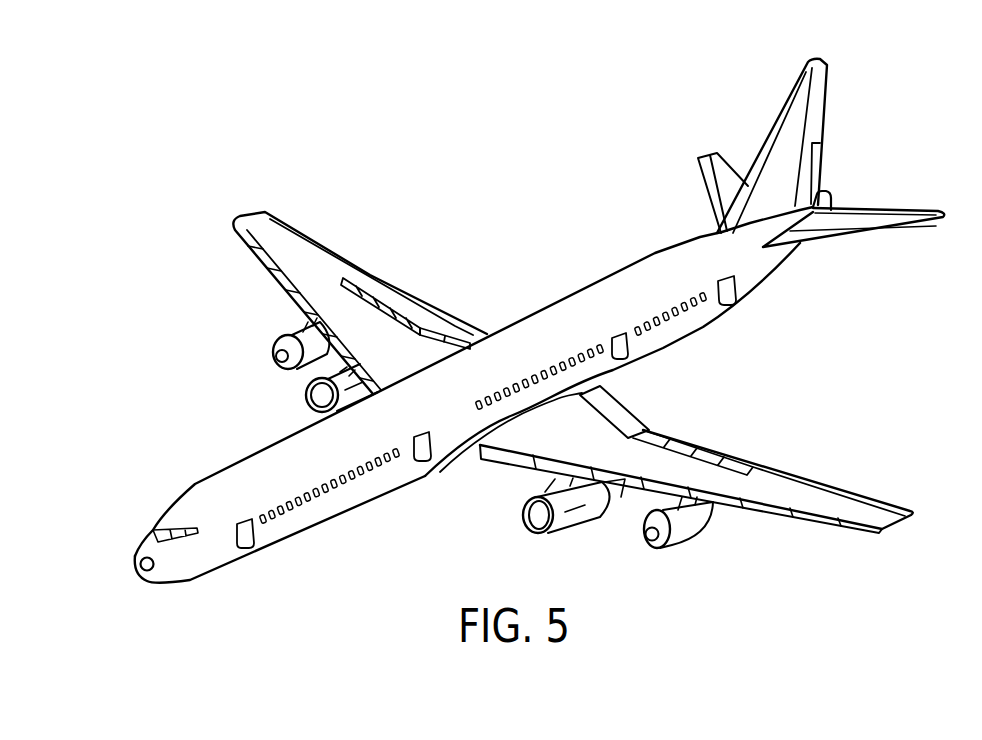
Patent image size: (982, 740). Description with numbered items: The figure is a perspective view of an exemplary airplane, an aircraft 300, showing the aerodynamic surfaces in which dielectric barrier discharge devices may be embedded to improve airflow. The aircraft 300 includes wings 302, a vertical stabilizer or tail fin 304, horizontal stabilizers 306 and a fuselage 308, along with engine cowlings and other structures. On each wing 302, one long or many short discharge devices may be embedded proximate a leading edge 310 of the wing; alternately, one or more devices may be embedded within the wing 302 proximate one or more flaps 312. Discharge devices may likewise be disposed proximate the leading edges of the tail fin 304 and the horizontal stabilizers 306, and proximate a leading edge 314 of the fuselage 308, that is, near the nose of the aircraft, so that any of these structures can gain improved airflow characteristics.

The aircraft 300 is at (542, 336).
The wing 302 is at (696, 482).
The vertical stabilizer or tail fin 304 is at (800, 105).
The horizontal stabilizer 306 is at (865, 222).
The fuselage 308 is at (293, 530).
The leading edge 310 is at (800, 513).
The flap 312 is at (607, 411).
The leading edge of fuselage 314 is at (149, 571).